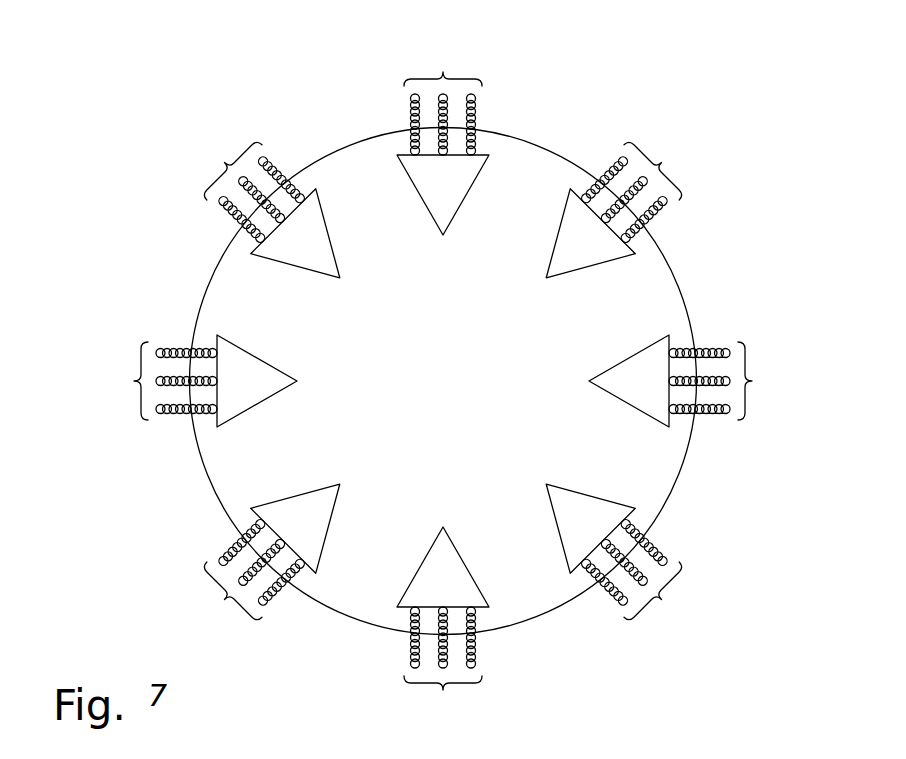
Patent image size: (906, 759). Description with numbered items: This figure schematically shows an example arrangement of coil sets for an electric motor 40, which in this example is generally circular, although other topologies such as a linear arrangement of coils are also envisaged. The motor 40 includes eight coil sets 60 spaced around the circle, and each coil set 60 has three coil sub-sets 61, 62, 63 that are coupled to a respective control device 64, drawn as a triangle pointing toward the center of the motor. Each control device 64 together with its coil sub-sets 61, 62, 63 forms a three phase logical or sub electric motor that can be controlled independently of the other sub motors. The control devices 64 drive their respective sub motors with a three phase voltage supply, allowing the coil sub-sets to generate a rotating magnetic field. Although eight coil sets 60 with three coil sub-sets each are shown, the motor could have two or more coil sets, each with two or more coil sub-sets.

The electric motor 40 is at (797, 557).
The coil set 60 is at (439, 379).
The coil sub-set 61 is at (482, 110).
The coil sub-set 62 is at (452, 93).
The coil sub-set 63 is at (418, 122).
The control device 64 is at (450, 193).